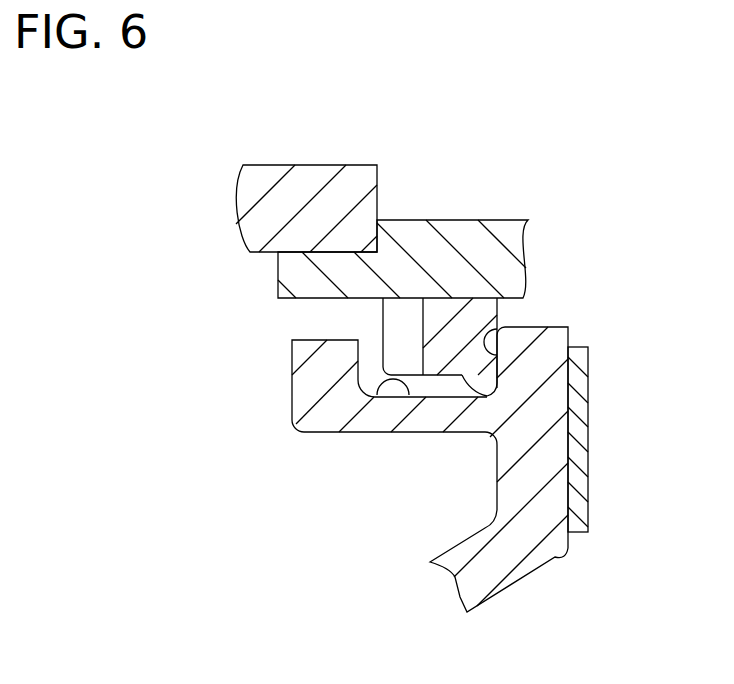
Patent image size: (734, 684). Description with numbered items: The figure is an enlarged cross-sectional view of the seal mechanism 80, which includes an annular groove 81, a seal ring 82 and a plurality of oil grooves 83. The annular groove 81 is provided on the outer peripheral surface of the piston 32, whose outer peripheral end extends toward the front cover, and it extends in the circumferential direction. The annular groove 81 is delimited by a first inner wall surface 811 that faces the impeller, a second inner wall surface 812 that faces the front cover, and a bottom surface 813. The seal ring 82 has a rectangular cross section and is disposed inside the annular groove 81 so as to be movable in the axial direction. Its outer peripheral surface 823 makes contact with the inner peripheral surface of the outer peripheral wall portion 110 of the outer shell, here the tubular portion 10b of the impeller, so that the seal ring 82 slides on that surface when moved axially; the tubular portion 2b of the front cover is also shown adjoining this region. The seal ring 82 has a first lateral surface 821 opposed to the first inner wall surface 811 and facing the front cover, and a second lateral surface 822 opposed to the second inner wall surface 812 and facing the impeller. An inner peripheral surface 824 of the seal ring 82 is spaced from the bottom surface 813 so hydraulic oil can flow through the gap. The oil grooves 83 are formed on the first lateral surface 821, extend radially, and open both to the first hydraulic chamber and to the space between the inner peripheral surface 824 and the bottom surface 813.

The tubular portion 2b is at (262, 165).
The outer peripheral wall portion 110 is at (371, 165).
The seal mechanism 80 is at (429, 159).
The tubular portion 10b is at (512, 220).
The oil grooves 83 is at (291, 240).
The annular groove 81 is at (422, 262).
The seal ring 82 is at (554, 284).
The outer peripheral surface 823 is at (518, 253).
The second lateral surface 822 is at (497, 312).
The first lateral surface 821 is at (382, 326).
The second inner wall surface 812 is at (584, 327).
The first inner wall surface 811 is at (366, 466).
The inner peripheral surface 824 is at (488, 394).
The bottom surface 813 is at (368, 432).
The piston 32 is at (523, 572).